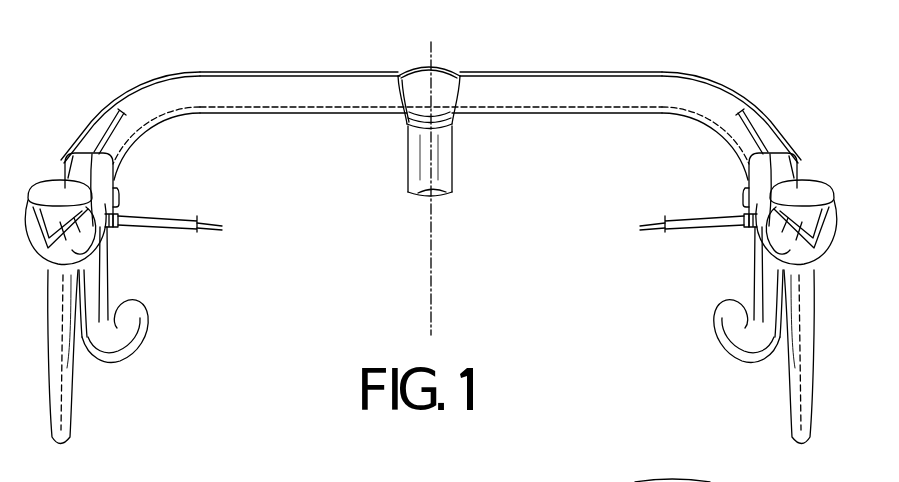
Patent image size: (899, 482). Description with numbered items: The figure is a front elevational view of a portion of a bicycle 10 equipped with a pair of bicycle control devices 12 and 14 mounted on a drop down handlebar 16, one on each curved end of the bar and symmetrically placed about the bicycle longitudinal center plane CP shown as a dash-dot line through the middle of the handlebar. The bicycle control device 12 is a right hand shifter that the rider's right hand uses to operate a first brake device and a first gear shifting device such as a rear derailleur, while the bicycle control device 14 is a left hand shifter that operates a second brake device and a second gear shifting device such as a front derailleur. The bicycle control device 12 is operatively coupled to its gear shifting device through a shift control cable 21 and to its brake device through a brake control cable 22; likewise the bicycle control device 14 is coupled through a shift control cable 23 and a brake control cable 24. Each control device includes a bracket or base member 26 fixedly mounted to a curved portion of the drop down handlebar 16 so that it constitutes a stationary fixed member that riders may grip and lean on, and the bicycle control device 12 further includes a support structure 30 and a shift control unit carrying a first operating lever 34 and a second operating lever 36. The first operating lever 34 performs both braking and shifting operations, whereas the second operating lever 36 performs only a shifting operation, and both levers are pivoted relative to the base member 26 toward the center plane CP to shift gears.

The bicycle 10 is at (452, 64).
The bicycle control device 12 is at (138, 238).
The bicycle control device 14 is at (722, 236).
The drop down handlebar 16 is at (483, 118).
The shift control cable 21 is at (171, 212).
The brake control cable 22 is at (95, 138).
The shift control cable 23 is at (700, 212).
The brake control cable 24 is at (771, 133).
The base member 26 is at (118, 176).
The support structure 30 is at (30, 257).
The first operating lever 34 is at (80, 418).
The second operating lever 36 is at (76, 371).
The bicycle longitudinal center plane CP is at (431, 275).